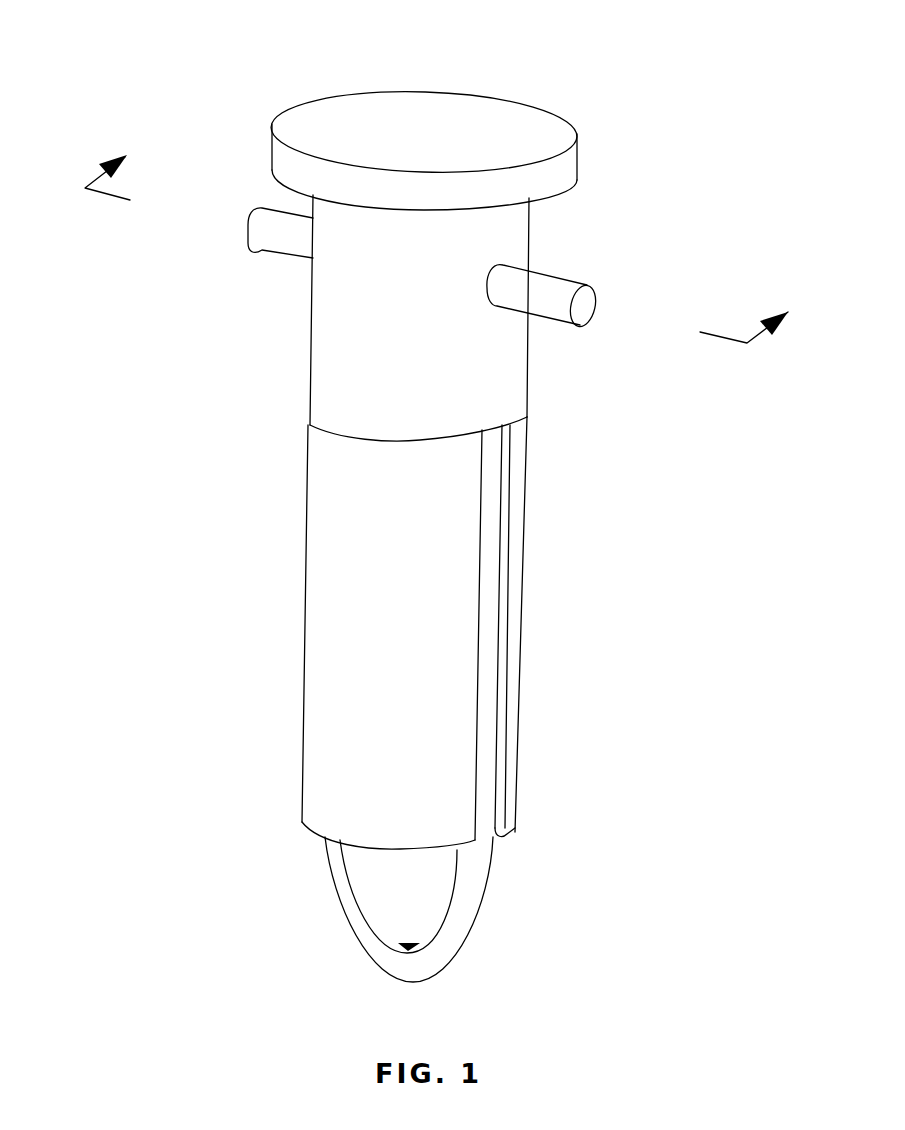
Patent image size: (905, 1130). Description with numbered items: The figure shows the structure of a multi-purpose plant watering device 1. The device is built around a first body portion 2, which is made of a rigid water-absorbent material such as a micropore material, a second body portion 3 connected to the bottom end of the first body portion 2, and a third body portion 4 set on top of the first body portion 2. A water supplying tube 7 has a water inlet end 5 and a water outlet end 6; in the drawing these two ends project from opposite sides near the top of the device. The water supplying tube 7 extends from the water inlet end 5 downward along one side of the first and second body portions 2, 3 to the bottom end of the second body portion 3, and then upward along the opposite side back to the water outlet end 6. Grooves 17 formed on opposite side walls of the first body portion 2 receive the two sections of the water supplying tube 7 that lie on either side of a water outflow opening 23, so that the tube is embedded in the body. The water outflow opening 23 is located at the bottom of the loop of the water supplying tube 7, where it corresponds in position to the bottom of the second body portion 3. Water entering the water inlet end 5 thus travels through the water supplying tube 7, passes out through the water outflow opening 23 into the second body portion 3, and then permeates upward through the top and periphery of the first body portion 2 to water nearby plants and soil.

The multi-purpose plant watering device 1 is at (378, 47).
The first body portion 2 is at (340, 608).
The second body portion 3 is at (392, 888).
The third body portion 4 is at (372, 328).
The water inlet end 5 is at (268, 232).
The water outlet end 6 is at (543, 297).
The water supplying tube 7 is at (447, 937).
The grooves 17 is at (507, 593).
The water outflow opening 23 is at (410, 947).